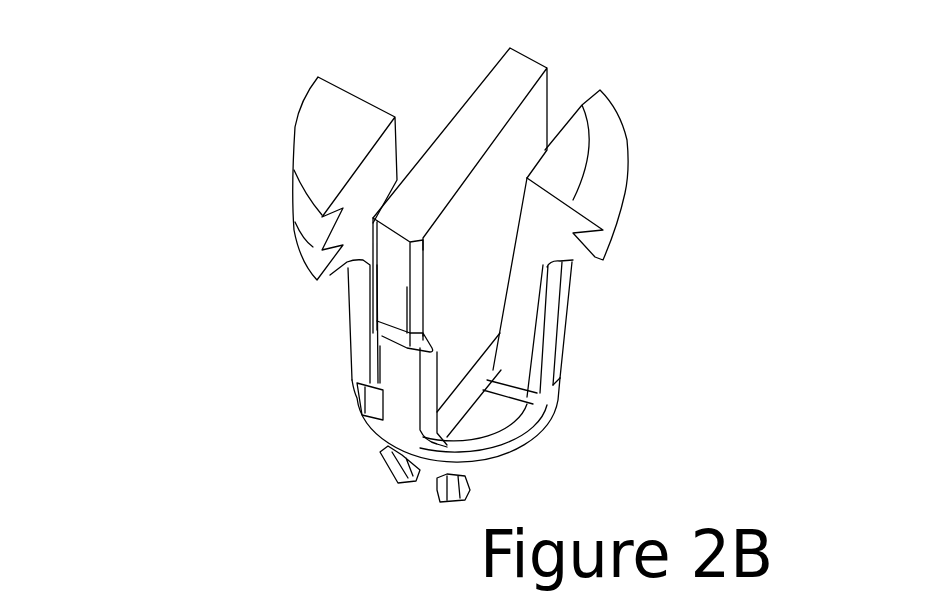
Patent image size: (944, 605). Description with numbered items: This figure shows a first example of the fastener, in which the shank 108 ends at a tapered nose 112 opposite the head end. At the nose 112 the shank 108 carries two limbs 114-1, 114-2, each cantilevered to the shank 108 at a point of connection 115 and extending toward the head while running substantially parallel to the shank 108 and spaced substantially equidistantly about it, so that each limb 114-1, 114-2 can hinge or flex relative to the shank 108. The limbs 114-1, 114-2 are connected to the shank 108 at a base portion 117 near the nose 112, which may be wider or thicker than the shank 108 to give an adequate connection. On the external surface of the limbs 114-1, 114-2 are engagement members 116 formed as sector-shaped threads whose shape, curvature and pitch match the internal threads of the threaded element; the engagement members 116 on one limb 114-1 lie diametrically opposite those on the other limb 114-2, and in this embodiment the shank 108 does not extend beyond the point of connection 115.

The shank 108 is at (503, 105).
The nose 112 is at (423, 478).
The limb 114-1 is at (363, 322).
The limb 114-2 is at (547, 322).
The point of connection 115 is at (357, 398).
The engagement members 116 is at (310, 225).
The base portion 117 is at (493, 435).